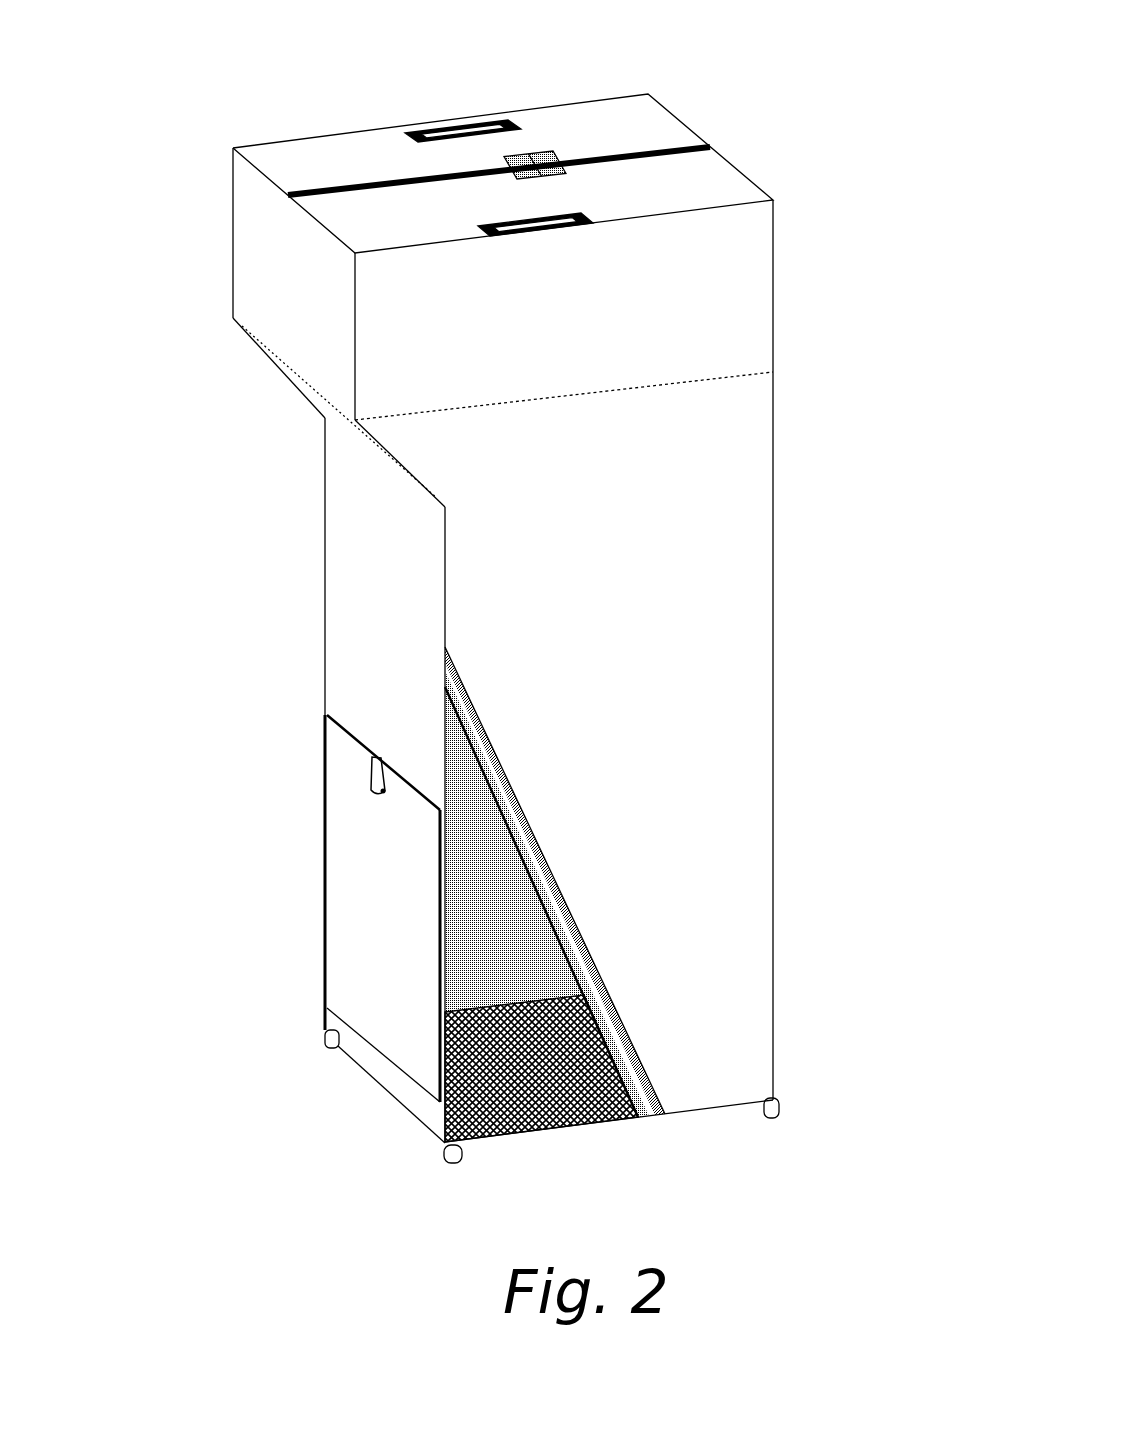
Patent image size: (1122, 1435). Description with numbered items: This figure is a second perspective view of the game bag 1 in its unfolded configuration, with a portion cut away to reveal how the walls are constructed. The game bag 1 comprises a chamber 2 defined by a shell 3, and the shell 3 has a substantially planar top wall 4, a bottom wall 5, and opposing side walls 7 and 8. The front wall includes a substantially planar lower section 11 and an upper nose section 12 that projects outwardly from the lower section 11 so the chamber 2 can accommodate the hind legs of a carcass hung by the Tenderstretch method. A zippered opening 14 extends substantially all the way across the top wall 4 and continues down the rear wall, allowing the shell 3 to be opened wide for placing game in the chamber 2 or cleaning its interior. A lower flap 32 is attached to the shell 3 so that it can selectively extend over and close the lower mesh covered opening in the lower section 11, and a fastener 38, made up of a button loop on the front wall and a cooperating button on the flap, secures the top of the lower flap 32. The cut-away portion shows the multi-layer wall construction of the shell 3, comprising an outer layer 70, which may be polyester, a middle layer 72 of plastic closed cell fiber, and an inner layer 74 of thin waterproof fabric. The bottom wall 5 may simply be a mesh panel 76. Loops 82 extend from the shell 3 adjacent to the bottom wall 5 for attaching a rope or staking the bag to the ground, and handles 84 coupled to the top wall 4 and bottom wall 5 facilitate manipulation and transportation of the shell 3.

The game bag 1 is at (206, 139).
The chamber 2 is at (491, 945).
The shell 3 is at (783, 677).
The top wall 4 is at (598, 128).
The bottom wall 5 is at (607, 1130).
The side wall 7 is at (477, 830).
The side wall 8 is at (564, 757).
The lower section 11 is at (371, 590).
The upper nose section 12 is at (277, 290).
The zippered opening 14 is at (673, 145).
The lower flap 32 is at (385, 905).
The fastener 38 is at (349, 767).
The outer layer 70 is at (683, 933).
The middle layer 72 is at (622, 1017).
The inner layer 74 is at (553, 913).
The mesh panel 76 is at (553, 1043).
The loops 82 is at (327, 1046).
The handles 84 is at (460, 125).